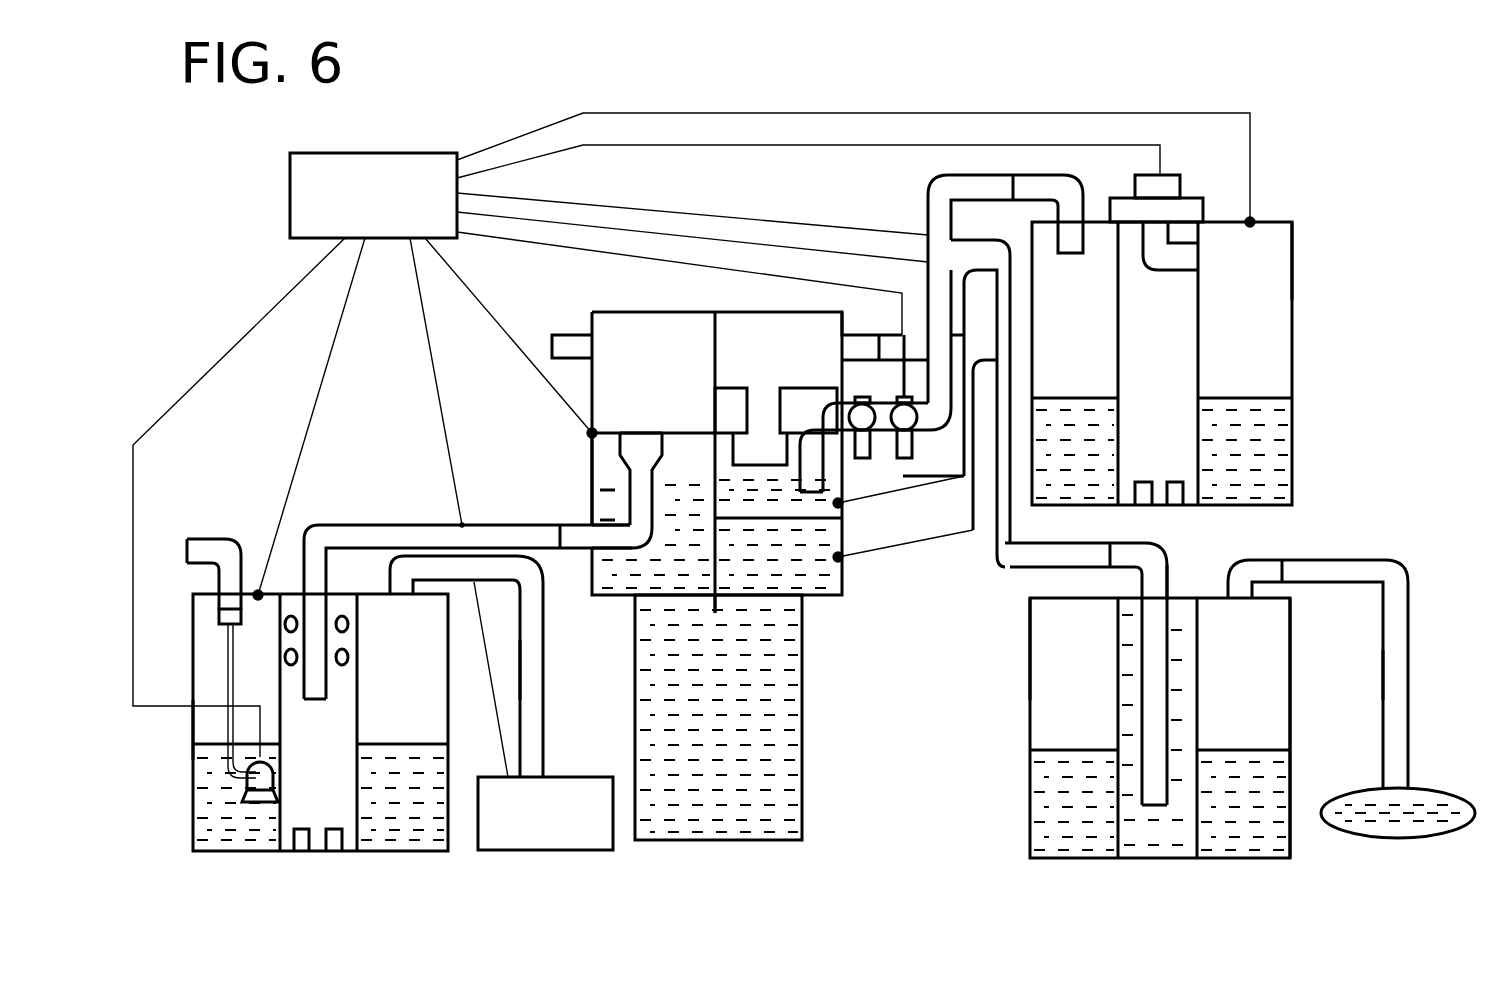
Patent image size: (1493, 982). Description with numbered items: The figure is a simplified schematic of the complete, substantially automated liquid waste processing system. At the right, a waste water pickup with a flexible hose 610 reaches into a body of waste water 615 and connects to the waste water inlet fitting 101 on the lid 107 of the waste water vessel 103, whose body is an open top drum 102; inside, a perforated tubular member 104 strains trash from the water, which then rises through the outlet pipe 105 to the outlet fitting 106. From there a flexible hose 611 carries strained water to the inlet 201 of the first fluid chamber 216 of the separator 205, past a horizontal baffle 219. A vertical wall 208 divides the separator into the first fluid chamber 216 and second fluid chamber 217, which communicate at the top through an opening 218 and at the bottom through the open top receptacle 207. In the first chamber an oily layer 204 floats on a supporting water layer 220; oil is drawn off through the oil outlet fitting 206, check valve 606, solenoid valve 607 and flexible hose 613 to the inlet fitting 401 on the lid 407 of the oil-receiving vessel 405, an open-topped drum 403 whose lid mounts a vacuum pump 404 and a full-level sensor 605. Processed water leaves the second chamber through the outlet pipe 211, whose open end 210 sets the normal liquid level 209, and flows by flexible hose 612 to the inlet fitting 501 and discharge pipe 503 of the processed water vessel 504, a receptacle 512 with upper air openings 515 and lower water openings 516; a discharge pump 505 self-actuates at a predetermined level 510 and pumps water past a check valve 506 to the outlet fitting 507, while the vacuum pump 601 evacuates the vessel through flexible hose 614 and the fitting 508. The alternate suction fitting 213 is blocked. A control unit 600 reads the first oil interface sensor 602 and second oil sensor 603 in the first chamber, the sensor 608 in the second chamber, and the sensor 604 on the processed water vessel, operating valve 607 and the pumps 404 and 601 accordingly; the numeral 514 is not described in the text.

The waste water inlet fitting 101 is at (1273, 560).
The open top drum 102 is at (1292, 710).
The waste water vessel 103 is at (1222, 728).
The tubular member 104 is at (1197, 660).
The outlet pipe 105 is at (1150, 683).
The outlet fitting 106 is at (1158, 560).
The lid 107 is at (1043, 598).
The inlet 201 is at (735, 312).
The oily layer 204 is at (656, 467).
The separator 205 is at (604, 308).
The oil outlet fitting 206 is at (864, 381).
The open top receptacle 207 is at (802, 812).
The vertical wall 208 is at (718, 605).
The normal liquid level 209 is at (617, 450).
The open end 210 is at (615, 459).
The outlet pipe 211 is at (580, 525).
The alternate suction fitting 213 is at (567, 335).
The first fluid chamber 216 is at (763, 394).
The second fluid chamber 217 is at (665, 352).
The opening 218 is at (737, 312).
The horizontal baffle 219 is at (728, 388).
The supporting water layer 220 is at (815, 520).
The inlet fitting 401 is at (1043, 173).
The open-topped drum 403 is at (1292, 382).
The vacuum pump 404 is at (1168, 172).
The oil-receiving vessel 405 is at (1262, 327).
The lid 407 is at (1293, 240).
The inlet fitting 501 is at (439, 666).
The discharge pipe 503 is at (318, 641).
The vessel 504 is at (352, 714).
The discharge pump 505 is at (226, 783).
The check valve 506 is at (220, 612).
The outlet fitting 507 is at (205, 539).
The fitting 508 is at (440, 545).
The predetermined level 510 is at (422, 747).
The receptacle 512 is at (193, 720).
The partition 514 is at (354, 682).
The openings 515 is at (284, 658).
The openings 516 is at (300, 845).
The control unit 600 is at (387, 153).
The vacuum pump 601 is at (572, 778).
The first oil interface sensor 602 is at (838, 503).
The second oil sensor 603 is at (838, 560).
The sensor 604 is at (262, 590).
The sensor 605 is at (1253, 222).
The check valve 606 is at (862, 390).
The solenoid valve 607 is at (907, 443).
The sensor 608 is at (585, 433).
The flexible hose 610 is at (1408, 685).
The flexible hose 611 is at (1003, 540).
The flexible hose 612 is at (443, 525).
The flexible hose 613 is at (946, 250).
The flexible hose 614 is at (546, 685).
The body of waste water 615 is at (1453, 787).